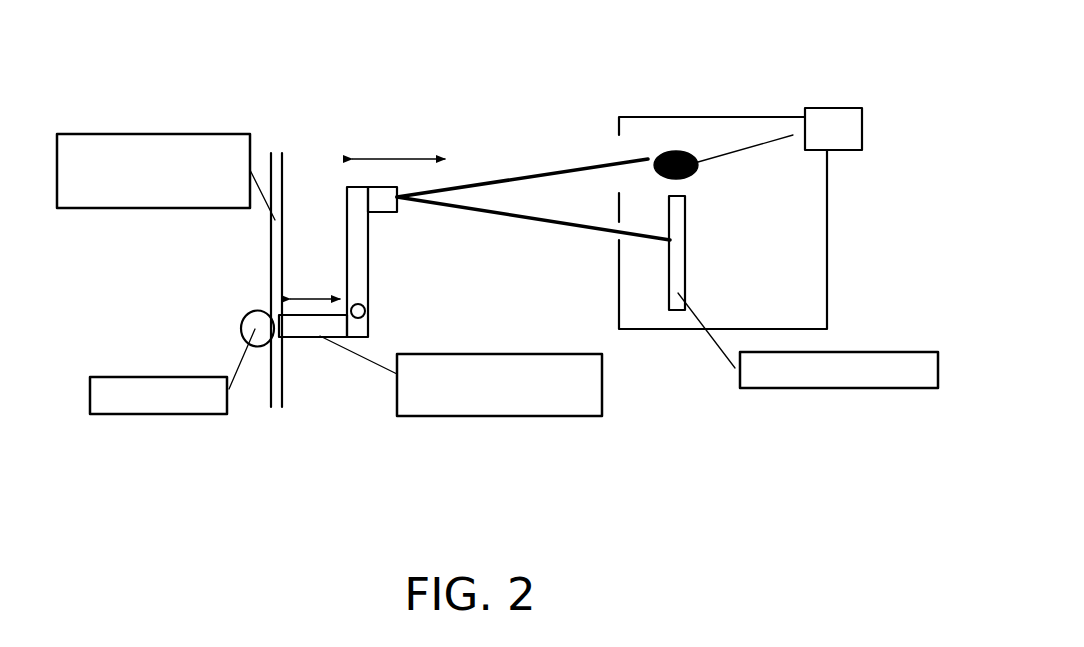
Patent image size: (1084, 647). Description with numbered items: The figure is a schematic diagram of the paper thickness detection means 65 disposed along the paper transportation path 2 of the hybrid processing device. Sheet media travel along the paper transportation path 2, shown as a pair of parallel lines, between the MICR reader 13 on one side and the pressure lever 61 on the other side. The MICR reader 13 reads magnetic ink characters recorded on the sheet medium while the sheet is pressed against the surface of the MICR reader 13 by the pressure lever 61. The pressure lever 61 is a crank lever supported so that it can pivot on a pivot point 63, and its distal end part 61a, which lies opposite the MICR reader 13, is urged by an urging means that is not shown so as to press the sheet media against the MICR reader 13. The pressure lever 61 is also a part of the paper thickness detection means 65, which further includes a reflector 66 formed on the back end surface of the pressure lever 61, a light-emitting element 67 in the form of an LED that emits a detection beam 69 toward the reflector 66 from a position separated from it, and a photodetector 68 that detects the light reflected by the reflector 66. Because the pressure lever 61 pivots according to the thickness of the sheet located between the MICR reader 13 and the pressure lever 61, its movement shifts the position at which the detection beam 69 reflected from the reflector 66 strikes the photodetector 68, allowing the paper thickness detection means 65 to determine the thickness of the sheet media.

The paper transportation path 2 is at (194, 134).
The MICR reader 13 is at (197, 414).
The pressure lever 61 is at (378, 247).
The distal end part 61a is at (520, 416).
The pivot point 63 is at (365, 309).
The paper thickness detection means 65 is at (690, 100).
The reflector 66 is at (399, 200).
The light-emitting element 67 is at (833, 108).
The photodetector 68 is at (845, 388).
The detection beam 69 is at (512, 178).